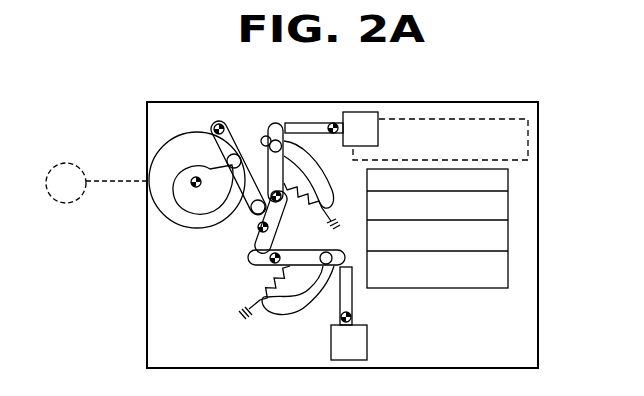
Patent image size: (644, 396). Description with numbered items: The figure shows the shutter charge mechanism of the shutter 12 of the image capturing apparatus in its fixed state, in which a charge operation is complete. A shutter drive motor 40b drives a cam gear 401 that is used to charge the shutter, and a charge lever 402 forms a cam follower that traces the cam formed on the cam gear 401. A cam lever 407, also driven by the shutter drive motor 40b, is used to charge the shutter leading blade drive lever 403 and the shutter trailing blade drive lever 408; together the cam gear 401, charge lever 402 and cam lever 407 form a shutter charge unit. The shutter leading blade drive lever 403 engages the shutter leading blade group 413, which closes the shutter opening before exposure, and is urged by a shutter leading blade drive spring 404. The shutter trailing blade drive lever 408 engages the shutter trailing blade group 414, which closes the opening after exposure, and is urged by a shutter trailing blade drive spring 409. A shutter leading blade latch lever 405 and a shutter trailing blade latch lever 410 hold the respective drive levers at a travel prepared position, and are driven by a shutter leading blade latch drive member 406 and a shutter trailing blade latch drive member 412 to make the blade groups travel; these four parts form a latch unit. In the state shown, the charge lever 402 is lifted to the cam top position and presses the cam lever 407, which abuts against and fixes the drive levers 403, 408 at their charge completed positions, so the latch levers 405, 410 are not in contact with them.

The shutter 12 is at (540, 118).
The shutter drive motor 40b is at (64, 161).
The cam gear 401 is at (177, 137).
The charge lever 402 is at (219, 124).
The shutter leading blade drive lever 403 is at (248, 260).
The shutter leading blade drive spring 404 is at (258, 296).
The shutter leading blade latch lever 405 is at (352, 297).
The shutter leading blade latch drive member 406 is at (367, 345).
The cam lever 407 is at (255, 242).
The shutter trailing blade drive lever 408 is at (266, 138).
The shutter trailing blade drive spring 409 is at (307, 146).
The shutter trailing blade latch lever 410 is at (322, 123).
The shutter trailing blade latch drive member 412 is at (378, 130).
The shutter leading blade group 413 is at (508, 199).
The shutter trailing blade group 414 is at (486, 119).